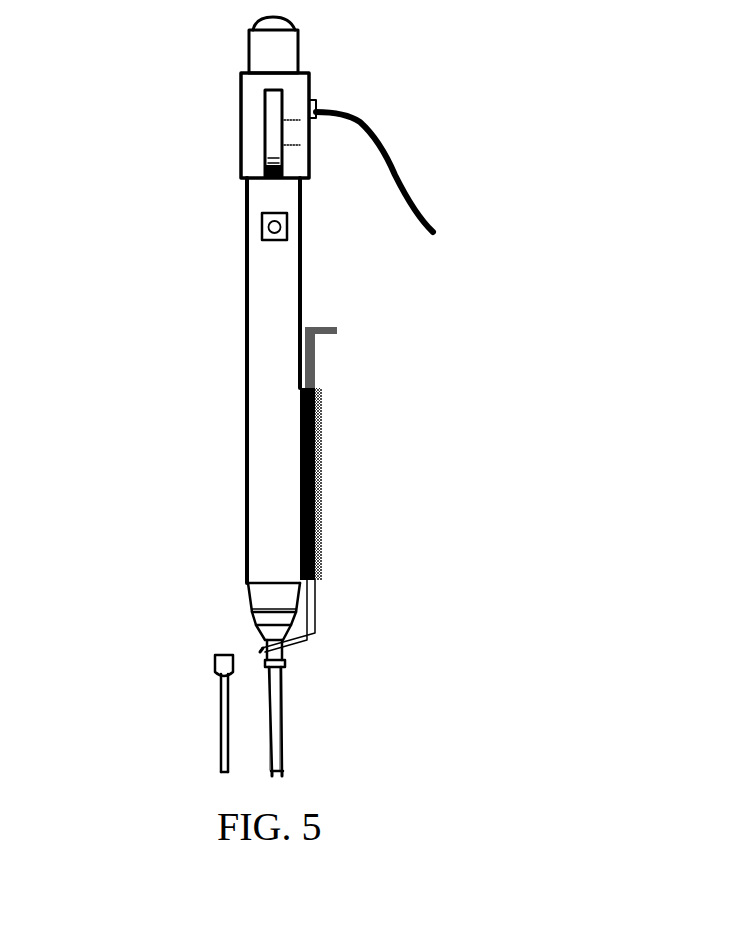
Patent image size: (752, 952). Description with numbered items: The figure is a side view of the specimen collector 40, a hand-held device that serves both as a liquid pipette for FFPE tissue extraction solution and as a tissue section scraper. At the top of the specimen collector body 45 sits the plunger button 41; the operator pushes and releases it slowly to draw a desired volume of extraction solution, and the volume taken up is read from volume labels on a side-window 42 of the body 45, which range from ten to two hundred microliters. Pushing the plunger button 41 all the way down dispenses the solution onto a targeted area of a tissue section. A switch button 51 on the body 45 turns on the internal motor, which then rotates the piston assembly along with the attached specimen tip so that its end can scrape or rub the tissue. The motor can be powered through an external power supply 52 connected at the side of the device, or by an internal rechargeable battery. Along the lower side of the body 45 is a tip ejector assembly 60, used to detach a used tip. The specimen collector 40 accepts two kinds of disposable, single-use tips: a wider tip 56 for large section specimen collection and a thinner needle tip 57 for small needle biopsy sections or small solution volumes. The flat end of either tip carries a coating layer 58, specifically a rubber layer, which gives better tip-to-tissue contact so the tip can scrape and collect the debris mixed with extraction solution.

The specimen collector 40 is at (184, 441).
The plunger button 41 is at (278, 43).
The side-window 42 is at (276, 120).
The specimen collector body 45 is at (269, 514).
The switch button 51 is at (262, 227).
The external power supply 52 is at (412, 232).
The wider tip 56 is at (276, 692).
The thinner needle tip 57 is at (221, 715).
The coating layer 58 is at (284, 773).
The tip ejector assembly 60 is at (318, 410).